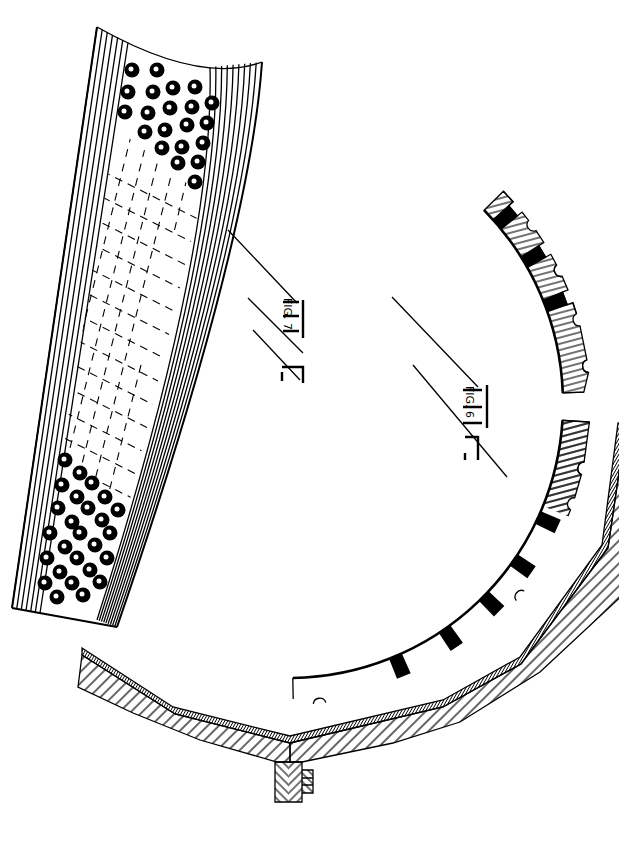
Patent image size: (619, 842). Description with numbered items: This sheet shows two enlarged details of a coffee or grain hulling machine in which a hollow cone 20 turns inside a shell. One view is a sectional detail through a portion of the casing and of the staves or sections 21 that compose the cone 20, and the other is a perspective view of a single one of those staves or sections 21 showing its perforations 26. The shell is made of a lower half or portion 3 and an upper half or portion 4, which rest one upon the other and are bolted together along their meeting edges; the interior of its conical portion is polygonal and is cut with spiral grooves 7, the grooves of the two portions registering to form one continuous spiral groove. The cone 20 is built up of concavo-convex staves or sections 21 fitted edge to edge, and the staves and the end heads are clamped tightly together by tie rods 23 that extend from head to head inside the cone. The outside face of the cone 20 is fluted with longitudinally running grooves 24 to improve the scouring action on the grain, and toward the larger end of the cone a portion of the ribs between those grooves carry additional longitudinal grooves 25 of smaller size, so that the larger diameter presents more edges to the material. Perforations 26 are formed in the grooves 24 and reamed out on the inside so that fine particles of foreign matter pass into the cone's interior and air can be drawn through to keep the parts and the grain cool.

In FIG. 6, the lower half or portion of the shell 3 is at (133, 714).
In FIG. 6, the upper half or portion of the shell 4 is at (407, 742).
In FIG. 6, the spiral grooves 7 is at (187, 688).
In FIG. 7, the cone 20 is at (184, 401).
In FIG. 6, the cone 20 is at (557, 347).
In FIG. 7, the staves or sections 21 is at (243, 156).
In FIG. 6, the staves or sections 21 is at (564, 407).
In FIG. 6, the tie rods 23 is at (300, 690).
In FIG. 6, the longitudinally running grooves 24 is at (509, 207).
In FIG. 6, the longitudinal grooves of smaller size 25 is at (580, 322).
In FIG. 7, the perforations 26 is at (195, 80).
In FIG. 6, the perforations 26 is at (543, 297).